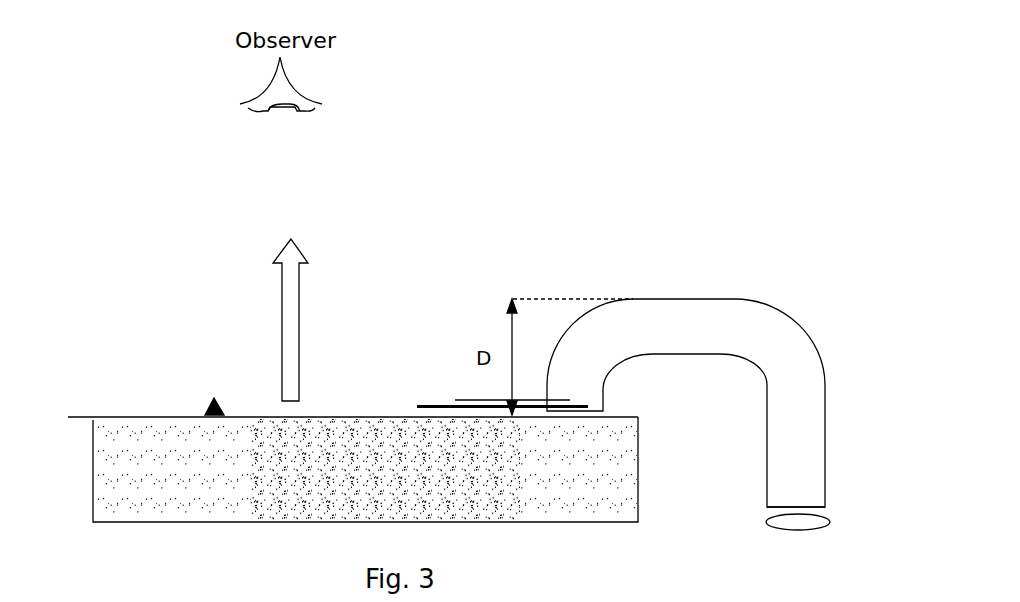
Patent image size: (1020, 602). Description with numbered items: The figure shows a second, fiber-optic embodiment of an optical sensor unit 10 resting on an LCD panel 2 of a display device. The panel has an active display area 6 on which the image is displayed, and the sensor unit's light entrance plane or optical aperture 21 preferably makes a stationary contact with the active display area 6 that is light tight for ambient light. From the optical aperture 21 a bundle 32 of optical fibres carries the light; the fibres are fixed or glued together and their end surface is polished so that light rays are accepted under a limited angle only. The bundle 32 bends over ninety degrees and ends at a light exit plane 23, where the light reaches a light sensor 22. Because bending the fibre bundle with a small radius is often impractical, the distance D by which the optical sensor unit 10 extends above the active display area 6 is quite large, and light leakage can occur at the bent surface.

The LCD panel 2 is at (128, 479).
The active display area 6 is at (210, 406).
The optical sensor unit 10 is at (740, 270).
The optical aperture 21 is at (585, 417).
The light sensor 22 is at (795, 522).
The light exit plane 23 is at (802, 507).
The bundle of optical fibres 32 is at (807, 430).